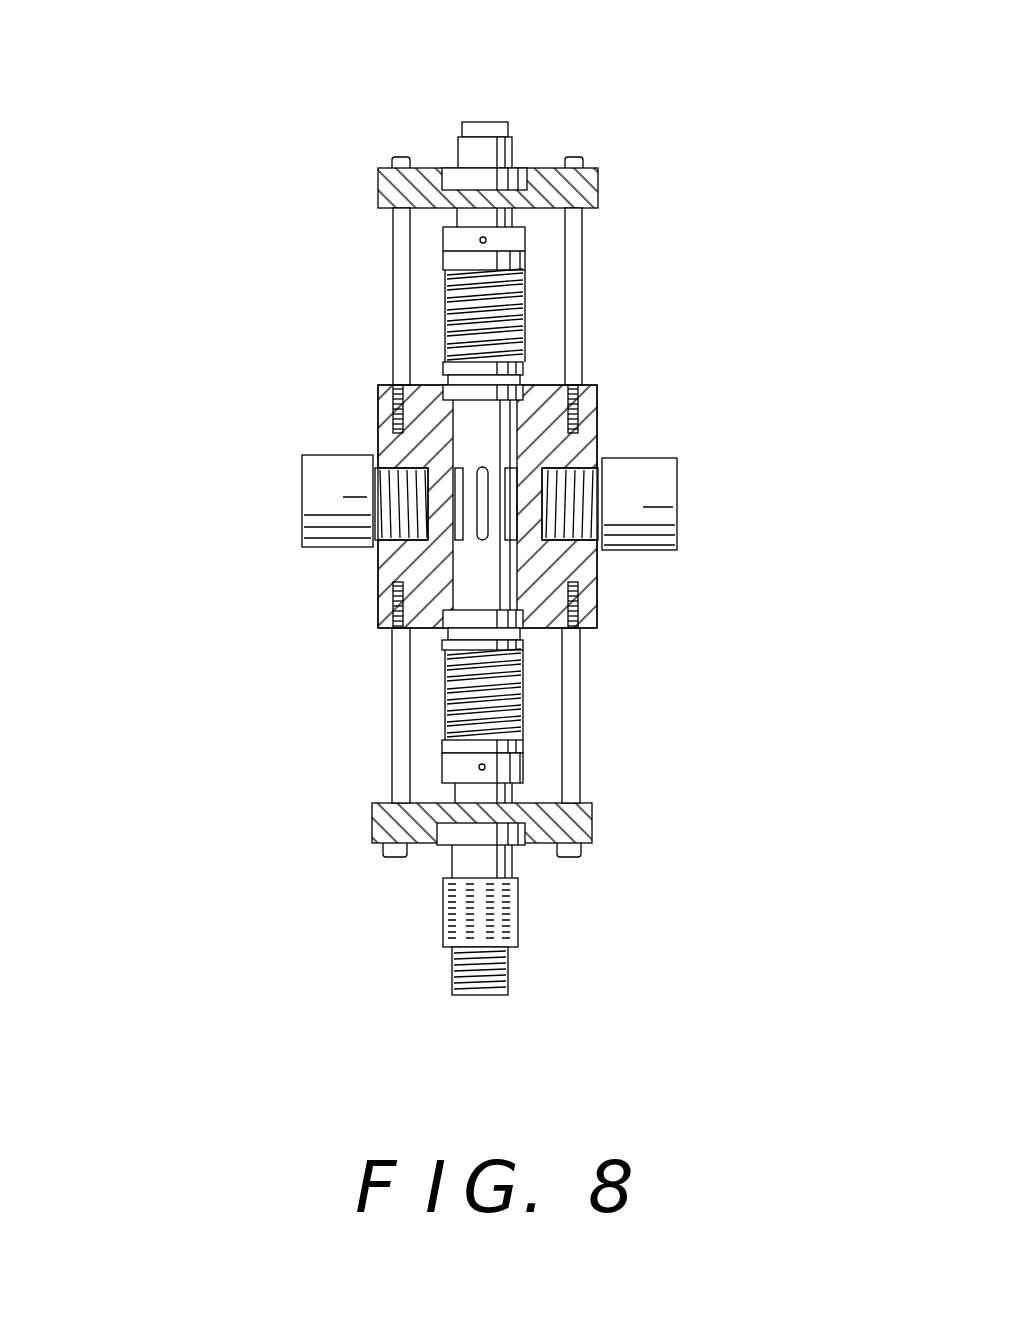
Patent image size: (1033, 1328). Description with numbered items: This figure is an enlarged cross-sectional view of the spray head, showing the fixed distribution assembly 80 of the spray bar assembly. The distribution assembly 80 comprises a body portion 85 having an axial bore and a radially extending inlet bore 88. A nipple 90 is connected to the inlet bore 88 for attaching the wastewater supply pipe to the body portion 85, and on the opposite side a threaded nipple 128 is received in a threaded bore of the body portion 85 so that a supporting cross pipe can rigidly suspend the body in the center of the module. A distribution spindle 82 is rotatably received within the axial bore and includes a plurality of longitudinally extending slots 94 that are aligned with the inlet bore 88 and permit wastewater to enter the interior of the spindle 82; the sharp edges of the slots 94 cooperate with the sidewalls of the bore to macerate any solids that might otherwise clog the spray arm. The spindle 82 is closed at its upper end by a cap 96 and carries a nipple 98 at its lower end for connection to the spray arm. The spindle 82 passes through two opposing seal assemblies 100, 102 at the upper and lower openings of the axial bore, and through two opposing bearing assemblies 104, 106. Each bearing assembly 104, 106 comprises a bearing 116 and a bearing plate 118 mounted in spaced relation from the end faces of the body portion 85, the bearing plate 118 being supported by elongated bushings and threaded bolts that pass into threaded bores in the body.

The distribution assembly 80 is at (280, 818).
The distribution spindle 82 is at (505, 430).
The body portion 85 is at (367, 573).
The inlet bore 88 is at (537, 522).
The nipple 90 is at (658, 492).
The longitudinally extending slots 94 is at (476, 478).
The cap 96 is at (493, 125).
The nipple 98 is at (518, 923).
The seal assembly 100 is at (530, 315).
The seal assembly 102 is at (527, 707).
The bearing assembly 104 is at (603, 168).
The bearing assembly 106 is at (605, 811).
The bearing 116 is at (448, 175).
The bearing plate 118 is at (379, 172).
The threaded nipple 128 is at (302, 470).